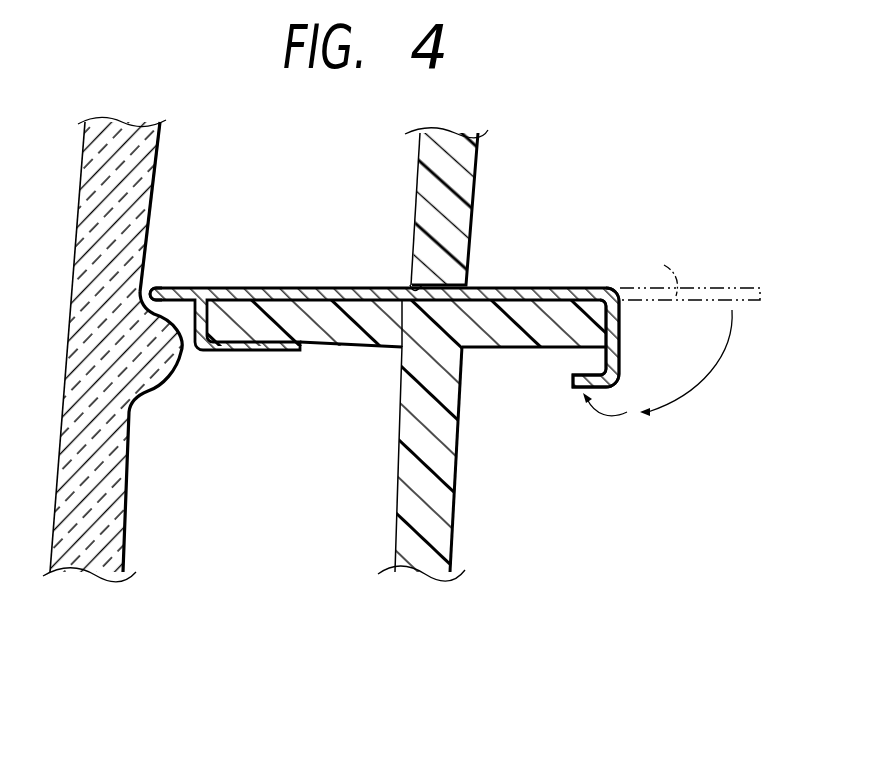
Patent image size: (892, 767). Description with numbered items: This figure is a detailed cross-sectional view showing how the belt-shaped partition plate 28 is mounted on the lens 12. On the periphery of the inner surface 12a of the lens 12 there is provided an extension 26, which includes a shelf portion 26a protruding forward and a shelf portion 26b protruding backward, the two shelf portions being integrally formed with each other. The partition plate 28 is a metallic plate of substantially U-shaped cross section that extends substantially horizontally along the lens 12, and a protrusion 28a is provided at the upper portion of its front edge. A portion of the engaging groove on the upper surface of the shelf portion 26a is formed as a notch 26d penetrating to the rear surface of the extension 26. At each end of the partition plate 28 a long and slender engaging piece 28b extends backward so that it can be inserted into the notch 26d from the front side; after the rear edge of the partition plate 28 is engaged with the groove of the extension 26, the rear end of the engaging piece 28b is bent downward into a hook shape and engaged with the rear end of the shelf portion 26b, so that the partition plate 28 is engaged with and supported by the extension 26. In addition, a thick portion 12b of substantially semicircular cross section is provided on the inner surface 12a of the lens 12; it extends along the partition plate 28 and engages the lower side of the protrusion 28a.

The lens 12 is at (168, 162).
The inner surface of the lens 12a is at (150, 215).
The thick portion 12b is at (166, 390).
The extension 26 is at (405, 186).
The shelf portion 26a is at (350, 335).
The shelf portion 26b is at (527, 325).
The notch 26d is at (407, 287).
The partition plate 28 is at (306, 268).
The protrusion 28a is at (155, 288).
The engaging piece 28b is at (623, 334).